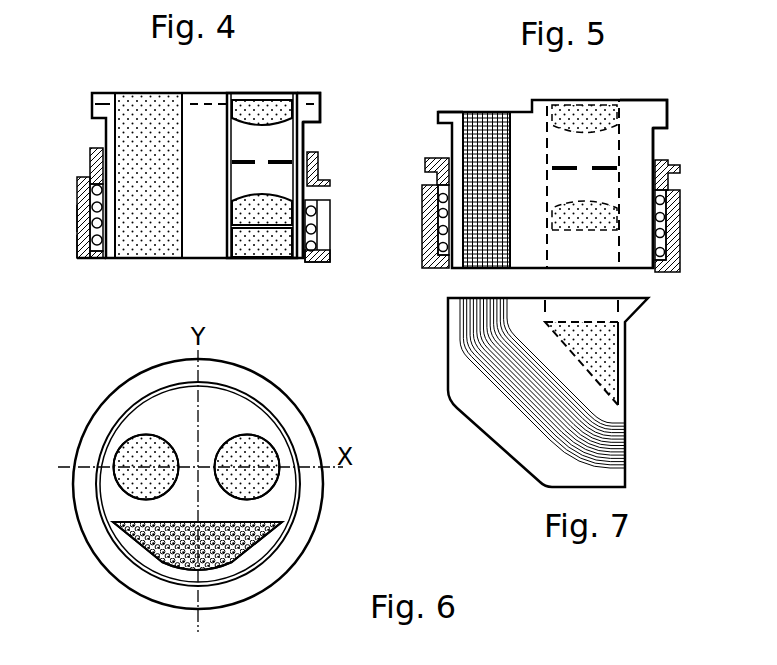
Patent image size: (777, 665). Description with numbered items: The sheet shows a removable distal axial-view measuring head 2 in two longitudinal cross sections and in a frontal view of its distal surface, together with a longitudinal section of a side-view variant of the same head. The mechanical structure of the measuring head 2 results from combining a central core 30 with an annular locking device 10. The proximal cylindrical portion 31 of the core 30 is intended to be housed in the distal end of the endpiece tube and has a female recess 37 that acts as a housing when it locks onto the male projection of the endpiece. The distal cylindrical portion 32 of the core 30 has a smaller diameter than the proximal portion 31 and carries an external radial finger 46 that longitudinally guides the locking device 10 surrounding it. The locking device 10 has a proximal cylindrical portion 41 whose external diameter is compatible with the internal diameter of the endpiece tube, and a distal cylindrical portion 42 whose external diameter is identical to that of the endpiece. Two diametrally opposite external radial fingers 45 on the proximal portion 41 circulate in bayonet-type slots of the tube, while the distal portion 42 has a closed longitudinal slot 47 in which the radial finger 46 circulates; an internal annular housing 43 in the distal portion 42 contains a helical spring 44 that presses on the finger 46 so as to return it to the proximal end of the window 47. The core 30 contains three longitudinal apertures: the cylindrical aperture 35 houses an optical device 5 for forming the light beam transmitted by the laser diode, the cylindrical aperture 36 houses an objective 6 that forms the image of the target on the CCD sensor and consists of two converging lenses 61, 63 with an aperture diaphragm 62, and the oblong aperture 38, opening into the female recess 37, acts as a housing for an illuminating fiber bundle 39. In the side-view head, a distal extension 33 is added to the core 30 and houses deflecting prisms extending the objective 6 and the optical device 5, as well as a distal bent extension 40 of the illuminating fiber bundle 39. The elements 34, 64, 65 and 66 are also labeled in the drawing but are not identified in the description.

In FIG. 4, the removable distal axial-view measuring head 2 is at (78, 105).
In FIG. 5, the removable distal axial-view measuring head 2 is at (696, 147).
In FIG. 6, the removable distal axial-view measuring head 2 is at (78, 403).
In FIG. 4, the optical device 5 is at (142, 93).
In FIG. 6, the optical device 5 is at (130, 437).
In FIG. 4, the objective 6 is at (263, 93).
In FIG. 6, the objective 6 is at (265, 440).
In FIG. 4, the annular locking device 10 is at (77, 220).
In FIG. 5, the annular locking device 10 is at (422, 212).
In FIG. 4, the central core 30 is at (203, 113).
In FIG. 5, the central core 30 is at (633, 101).
In FIG. 6, the central core 30 is at (222, 408).
In FIG. 4, the proximal cylindrical portion 31 is at (320, 103).
In FIG. 5, the proximal cylindrical portion 31 is at (668, 112).
In FIG. 4, the distal cylindrical portion 32 is at (308, 133).
In FIG. 5, the distal cylindrical portion 32 is at (653, 147).
In FIG. 7, the distal extension 33 is at (470, 398).
In FIG. 4, the flange 34 is at (313, 93).
In FIG. 5, the flange 34 is at (650, 100).
In FIG. 4, the cylindrical aperture 35 is at (116, 93).
In FIG. 6, the cylindrical aperture 35 is at (110, 483).
In FIG. 4, the cylindrical aperture 36 is at (295, 95).
In FIG. 6, the cylindrical aperture 36 is at (285, 483).
In FIG. 5, the female recess 37 is at (447, 112).
In FIG. 5, the oblong aperture 38 is at (507, 112).
In FIG. 6, the oblong aperture 38 is at (145, 557).
In FIG. 5, the illuminating fiber bundle 39 is at (481, 112).
In FIG. 6, the illuminating fiber bundle 39 is at (265, 550).
In FIG. 7, the distal bent extension 40 is at (543, 418).
In FIG. 4, the proximal cylindrical portion 41 is at (90, 155).
In FIG. 4, the distal cylindrical portion 42 is at (78, 260).
In FIG. 6, the distal cylindrical portion 42 is at (305, 440).
In FIG. 4, the internal annular housing 43 is at (78, 190).
In FIG. 4, the helical spring 44 is at (75, 247).
In FIG. 5, the external radial fingers 45 is at (425, 160).
In FIG. 4, the external radial finger 46 is at (328, 248).
In FIG. 4, the closed longitudinal slot 47 is at (325, 233).
In FIG. 4, the converging lens 61 is at (230, 118).
In FIG. 4, the aperture diaphragm 62 is at (232, 164).
In FIG. 4, the converging lens 63 is at (232, 205).
In FIG. 4, the filter plate 64 is at (232, 242).
In FIG. 7, the fiber end region 65 is at (618, 343).
In FIG. 7, the fiber end face 66 is at (618, 390).